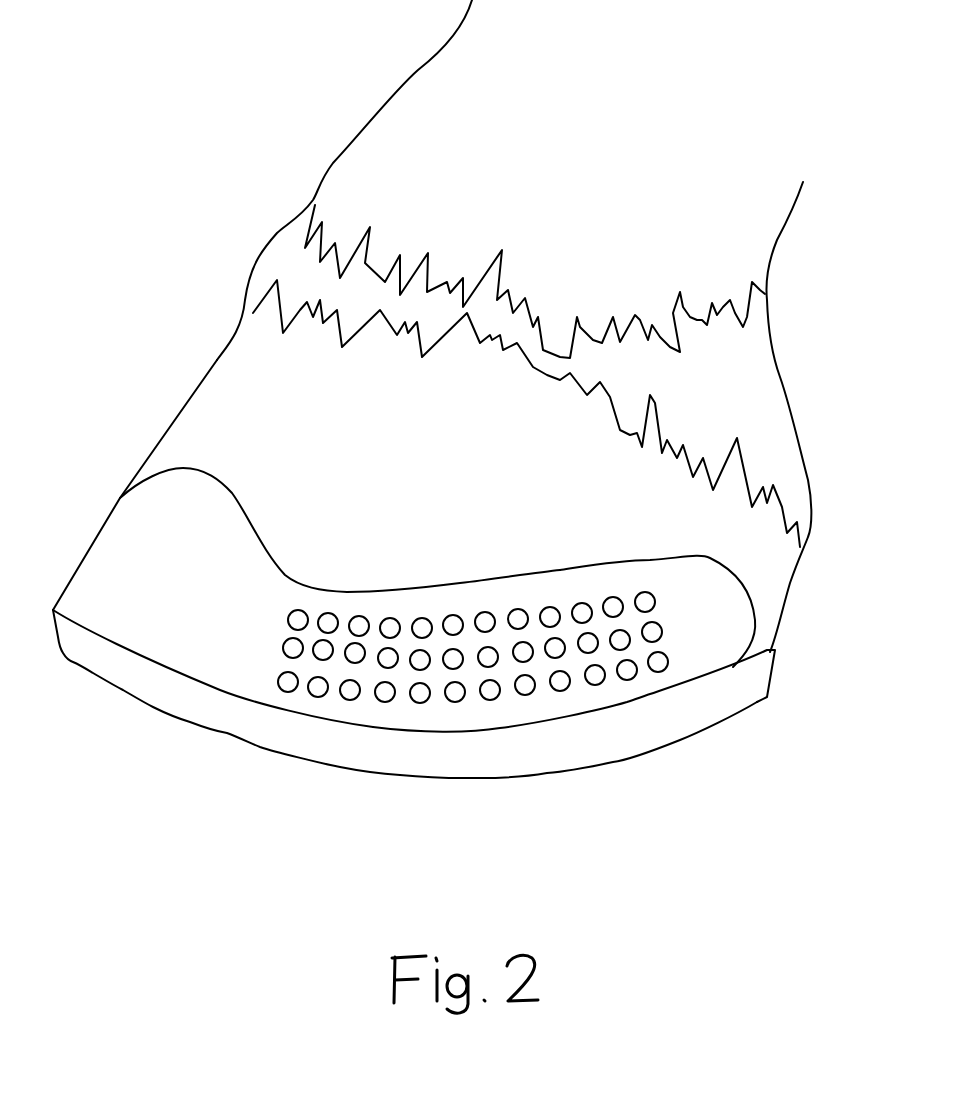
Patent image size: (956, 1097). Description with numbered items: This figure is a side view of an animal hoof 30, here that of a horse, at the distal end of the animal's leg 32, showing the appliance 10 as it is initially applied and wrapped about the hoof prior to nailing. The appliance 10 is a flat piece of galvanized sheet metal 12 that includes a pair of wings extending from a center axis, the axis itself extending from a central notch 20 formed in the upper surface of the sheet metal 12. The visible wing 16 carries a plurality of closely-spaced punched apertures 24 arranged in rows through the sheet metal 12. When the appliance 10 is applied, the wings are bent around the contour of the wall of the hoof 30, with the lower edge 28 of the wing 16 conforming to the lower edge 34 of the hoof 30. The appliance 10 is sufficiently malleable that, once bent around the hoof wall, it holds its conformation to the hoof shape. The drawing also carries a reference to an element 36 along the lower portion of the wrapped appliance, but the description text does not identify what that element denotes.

The appliance 10 is at (416, 513).
The galvanized sheet metal 12 is at (223, 513).
The wing 16 is at (520, 580).
The central notch 20 is at (120, 497).
The punched apertures 24 is at (675, 648).
The lower edge 28 is at (623, 702).
The hoof 30 is at (253, 340).
The leg 32 is at (428, 98).
The lower edge of hoof 34 is at (220, 690).
The band bottom edge 36 is at (473, 768).